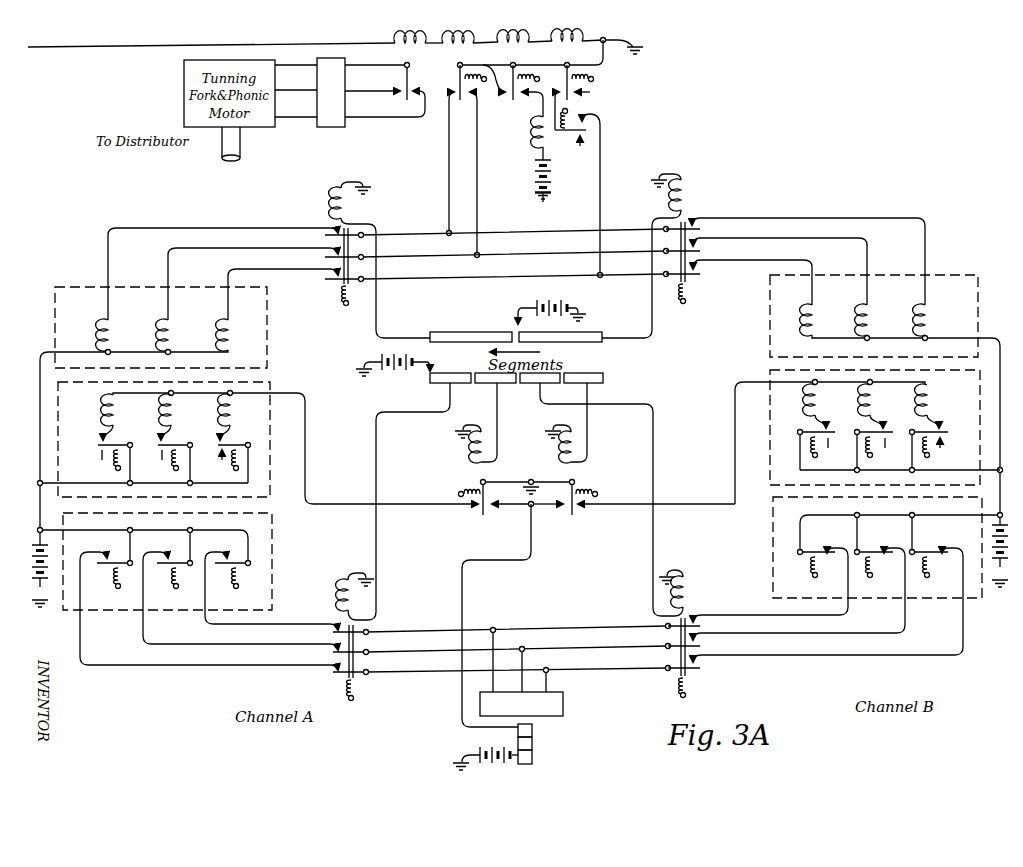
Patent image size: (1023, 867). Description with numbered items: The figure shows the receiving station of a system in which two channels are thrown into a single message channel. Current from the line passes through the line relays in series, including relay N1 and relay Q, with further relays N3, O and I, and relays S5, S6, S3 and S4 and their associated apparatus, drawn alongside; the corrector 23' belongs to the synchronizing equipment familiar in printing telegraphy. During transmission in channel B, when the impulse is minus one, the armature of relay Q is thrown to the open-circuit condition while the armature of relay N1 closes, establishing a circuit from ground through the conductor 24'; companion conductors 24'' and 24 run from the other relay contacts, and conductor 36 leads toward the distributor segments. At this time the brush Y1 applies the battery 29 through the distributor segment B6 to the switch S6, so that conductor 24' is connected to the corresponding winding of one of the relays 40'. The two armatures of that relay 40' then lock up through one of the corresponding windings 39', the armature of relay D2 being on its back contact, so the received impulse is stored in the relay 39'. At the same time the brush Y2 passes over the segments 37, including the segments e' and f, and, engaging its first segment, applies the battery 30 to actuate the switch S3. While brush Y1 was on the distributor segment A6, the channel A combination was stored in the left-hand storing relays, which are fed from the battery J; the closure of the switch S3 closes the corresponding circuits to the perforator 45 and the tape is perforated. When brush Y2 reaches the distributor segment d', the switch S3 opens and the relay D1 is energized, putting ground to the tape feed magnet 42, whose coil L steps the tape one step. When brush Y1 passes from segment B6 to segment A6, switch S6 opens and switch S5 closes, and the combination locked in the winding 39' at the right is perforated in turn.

The inductance coil N3 is at (459, 30).
The relay N1 is at (514, 29).
The relay Q is at (567, 27).
The corrector contacts 23' is at (371, 97).
The conductor 24'' is at (459, 164).
The conductor 24' is at (483, 175).
The conductor 24 is at (603, 196).
The relay coil O is at (532, 126).
The battery I is at (535, 181).
The switch S5 is at (368, 260).
The switch S6 is at (687, 240).
The conductor 36 is at (641, 274).
The relays 40' is at (885, 400).
The windings 39' is at (867, 437).
The distributor segment A6 is at (470, 326).
The brush Y1 is at (504, 324).
The distributor segment B6 is at (565, 326).
The battery 29 is at (552, 316).
The battery 30 is at (393, 373).
The brush Y2 is at (450, 369).
The distributor segments 37 is at (542, 388).
The distributor segment d' is at (495, 388).
The segment e' is at (507, 388).
The segment f is at (583, 387).
The relay D1 is at (490, 423).
The relay D2 is at (580, 423).
The battery J is at (26, 576).
The switch S3 is at (391, 542).
The relay switch S4 is at (679, 618).
The perforator 45 is at (555, 693).
The tape feed magnet 42 is at (481, 764).
The relay coil L is at (530, 751).